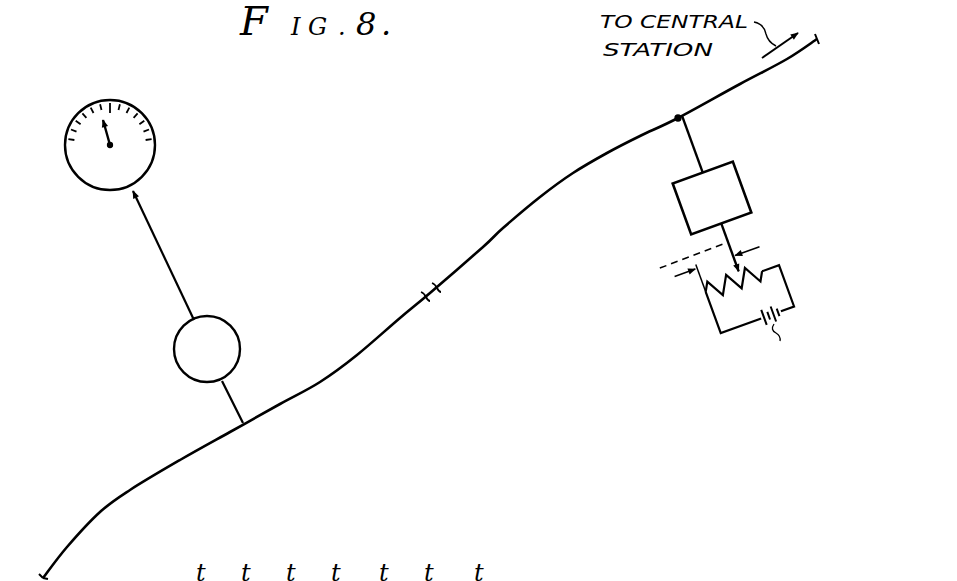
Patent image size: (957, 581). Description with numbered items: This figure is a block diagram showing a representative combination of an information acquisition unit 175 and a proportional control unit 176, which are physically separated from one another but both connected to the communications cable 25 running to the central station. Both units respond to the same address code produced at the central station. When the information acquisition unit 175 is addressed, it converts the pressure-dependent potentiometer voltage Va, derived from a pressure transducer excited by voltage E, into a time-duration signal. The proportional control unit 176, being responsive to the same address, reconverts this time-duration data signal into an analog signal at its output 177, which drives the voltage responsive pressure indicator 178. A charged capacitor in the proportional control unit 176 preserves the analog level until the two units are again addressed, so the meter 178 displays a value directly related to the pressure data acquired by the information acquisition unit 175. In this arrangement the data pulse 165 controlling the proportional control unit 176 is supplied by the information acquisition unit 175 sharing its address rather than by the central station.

The communications cable 25 is at (503, 227).
The pressure indicator 178 is at (155, 130).
The output 177 is at (186, 298).
The proportional control unit 176 is at (241, 341).
The information acquisition unit 175 is at (742, 187).
The data pulse 165 is at (697, 577).